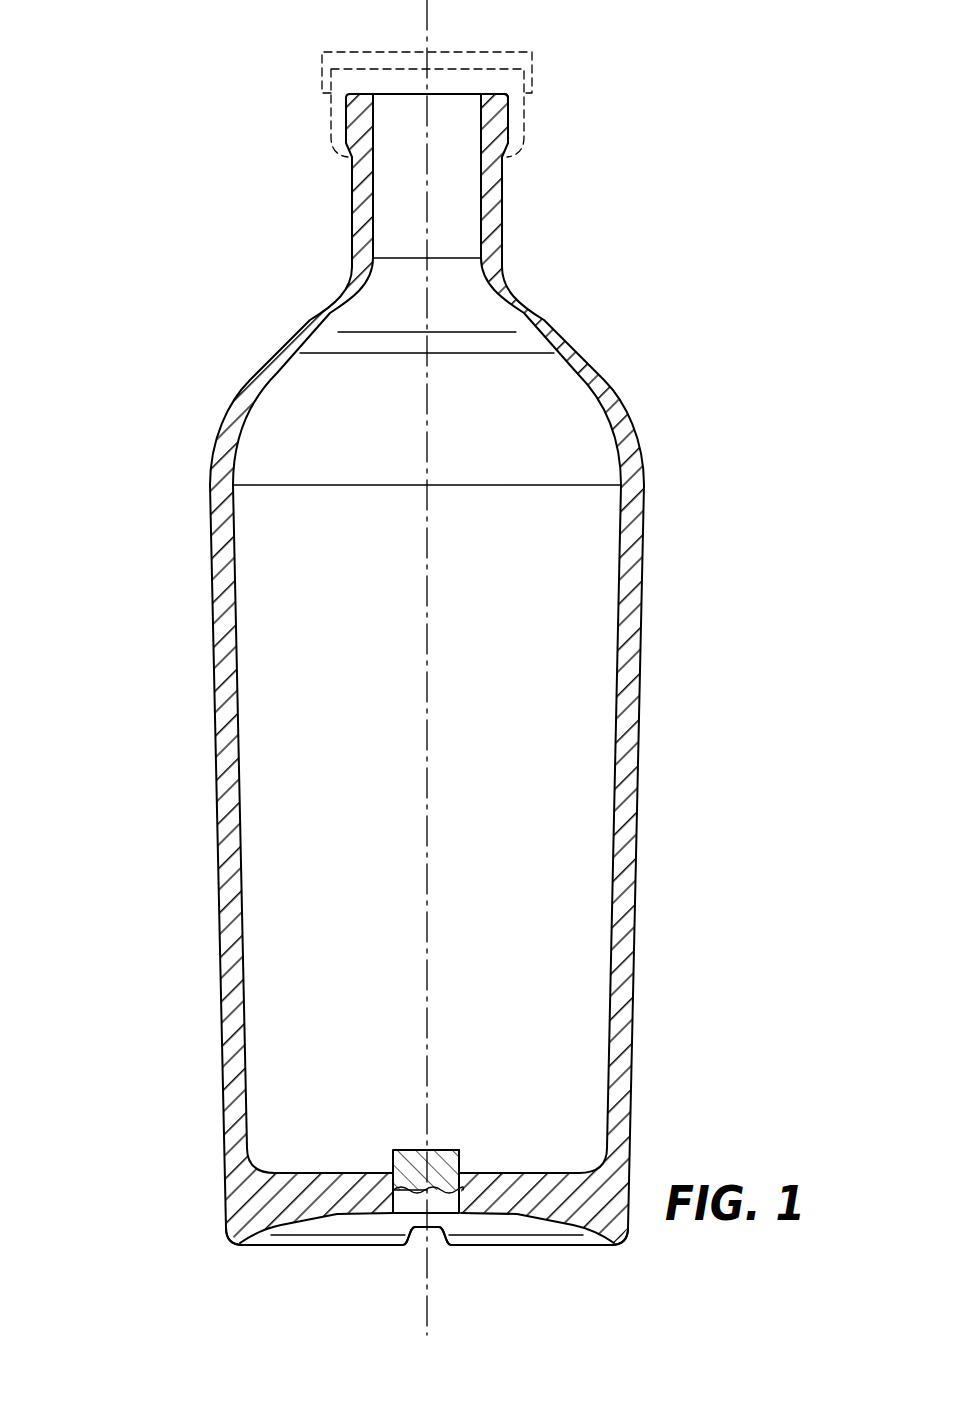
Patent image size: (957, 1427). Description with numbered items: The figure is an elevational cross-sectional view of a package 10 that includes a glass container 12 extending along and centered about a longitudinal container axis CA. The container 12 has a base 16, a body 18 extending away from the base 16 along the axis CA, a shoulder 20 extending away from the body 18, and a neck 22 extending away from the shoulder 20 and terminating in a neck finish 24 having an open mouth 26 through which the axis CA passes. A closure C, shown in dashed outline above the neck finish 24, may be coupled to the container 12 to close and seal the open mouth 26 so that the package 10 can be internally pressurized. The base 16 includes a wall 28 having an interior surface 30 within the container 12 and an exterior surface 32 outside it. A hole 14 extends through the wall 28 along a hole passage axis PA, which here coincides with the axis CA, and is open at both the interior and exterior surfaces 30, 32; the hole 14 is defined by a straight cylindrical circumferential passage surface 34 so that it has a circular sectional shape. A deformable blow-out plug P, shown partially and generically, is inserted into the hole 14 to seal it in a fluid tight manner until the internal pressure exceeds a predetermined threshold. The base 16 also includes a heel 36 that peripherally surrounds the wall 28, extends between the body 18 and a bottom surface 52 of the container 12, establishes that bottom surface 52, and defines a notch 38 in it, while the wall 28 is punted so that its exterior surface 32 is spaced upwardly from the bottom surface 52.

The package 10 is at (116, 140).
The container 12 is at (205, 630).
The hole 14 is at (410, 1182).
The base 16 is at (601, 1262).
The body 18 is at (645, 802).
The shoulder 20 is at (636, 405).
The neck 22 is at (507, 196).
The neck finish 24 is at (512, 110).
The open mouth 26 is at (481, 94).
The wall 28 is at (300, 1212).
The interior surface 30 is at (355, 1172).
The exterior surface 32 is at (365, 1236).
The circumferential passage surface 34 is at (410, 1232).
The heel 36 is at (241, 1254).
The notch 38 is at (440, 1240).
The bottom surface 52 is at (612, 1245).
The closure C is at (337, 52).
The longitudinal container axis CA is at (427, 23).
The deformable blow-out plug P is at (447, 1158).
The hole passage axis PA is at (430, 1176).